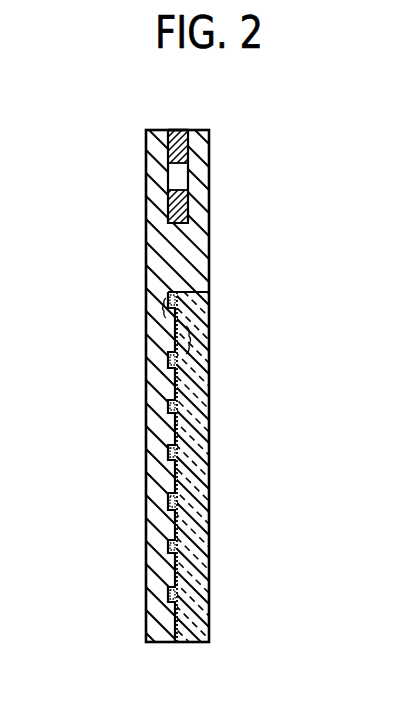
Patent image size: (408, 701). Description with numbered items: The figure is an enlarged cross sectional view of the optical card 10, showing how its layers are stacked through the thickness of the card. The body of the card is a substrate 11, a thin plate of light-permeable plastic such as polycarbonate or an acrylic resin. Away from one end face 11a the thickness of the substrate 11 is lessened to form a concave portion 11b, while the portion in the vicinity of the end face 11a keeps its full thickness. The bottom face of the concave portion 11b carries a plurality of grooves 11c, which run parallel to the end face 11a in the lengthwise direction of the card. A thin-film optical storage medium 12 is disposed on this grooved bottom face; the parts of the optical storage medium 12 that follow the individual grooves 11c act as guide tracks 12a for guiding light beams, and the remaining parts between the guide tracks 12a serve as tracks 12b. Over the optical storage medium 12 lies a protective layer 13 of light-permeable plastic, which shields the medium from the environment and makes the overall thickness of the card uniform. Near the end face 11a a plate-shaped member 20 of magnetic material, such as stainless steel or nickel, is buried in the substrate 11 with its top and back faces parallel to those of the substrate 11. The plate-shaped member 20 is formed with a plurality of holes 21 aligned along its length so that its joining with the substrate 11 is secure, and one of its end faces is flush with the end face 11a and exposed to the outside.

The head body 10 is at (196, 262).
The substrate 11 is at (155, 465).
The end face 11a is at (180, 130).
The concave portion 11b is at (200, 293).
The grooves 11c is at (170, 405).
The optical storage medium 12 is at (180, 575).
The guide tracks 12a is at (165, 308).
The tracks 12b is at (200, 338).
The protective layer 13 is at (205, 477).
The plate-shaped member 20 is at (182, 150).
The holes 21 is at (178, 180).